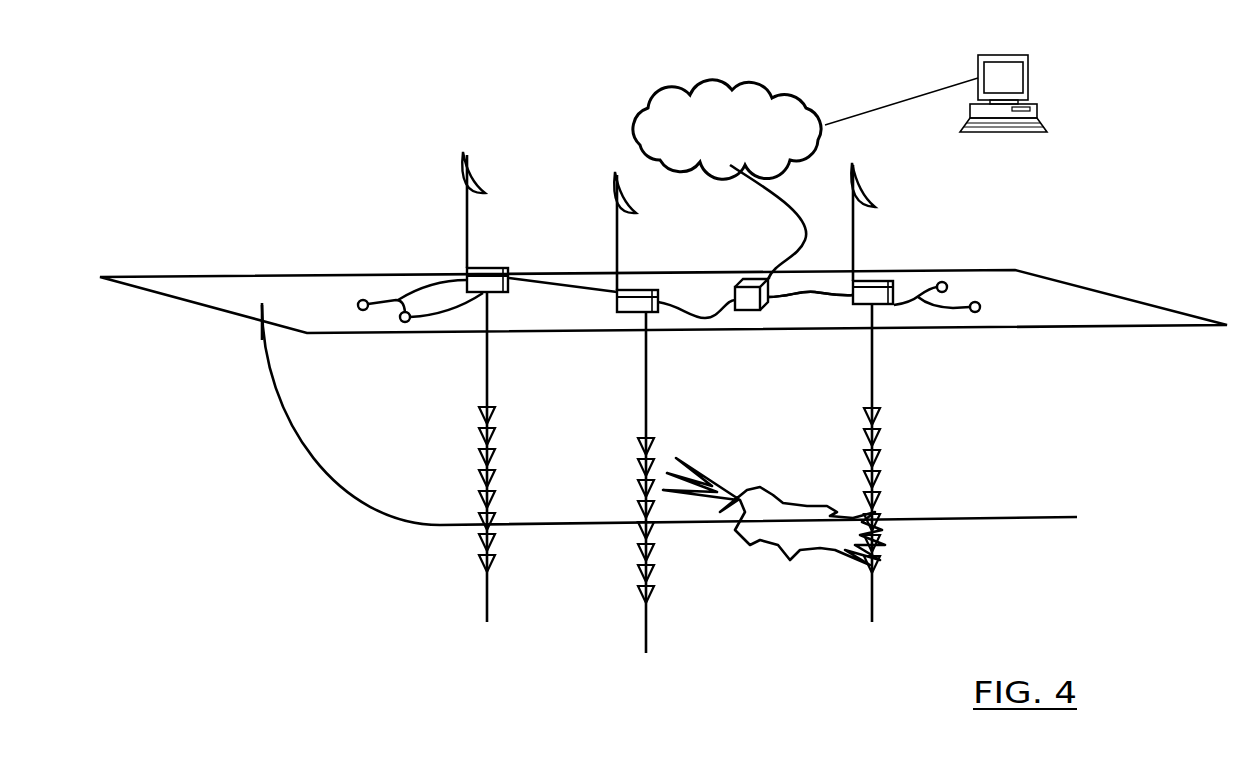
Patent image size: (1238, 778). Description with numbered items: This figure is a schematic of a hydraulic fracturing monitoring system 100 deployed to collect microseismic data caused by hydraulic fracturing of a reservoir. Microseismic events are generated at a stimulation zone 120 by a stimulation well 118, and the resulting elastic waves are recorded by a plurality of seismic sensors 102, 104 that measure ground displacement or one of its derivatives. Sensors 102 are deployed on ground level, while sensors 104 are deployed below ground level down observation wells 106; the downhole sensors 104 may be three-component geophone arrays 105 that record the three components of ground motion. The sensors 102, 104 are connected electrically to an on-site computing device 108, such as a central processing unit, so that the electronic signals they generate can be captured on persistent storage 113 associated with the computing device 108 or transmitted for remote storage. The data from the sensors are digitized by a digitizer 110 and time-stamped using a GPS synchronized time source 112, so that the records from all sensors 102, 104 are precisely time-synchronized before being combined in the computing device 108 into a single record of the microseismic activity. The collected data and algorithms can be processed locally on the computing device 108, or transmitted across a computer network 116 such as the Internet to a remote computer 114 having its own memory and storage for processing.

The hydraulic fracturing monitoring system 100 is at (283, 106).
The seismic sensors 102 is at (1090, 188).
The seismic sensors 104 is at (640, 498).
The three-component geophone array 105 is at (895, 408).
The observation wells 106 is at (859, 614).
The computing device 108 is at (765, 303).
The digitizer 110 is at (627, 290).
The GPS synchronized time source 112 is at (617, 172).
The persistent storage 113 is at (755, 305).
The remote computer 114 is at (1047, 89).
The computer network 116 is at (805, 163).
The stimulation well 118 is at (435, 520).
The stimulation zone 120 is at (737, 548).